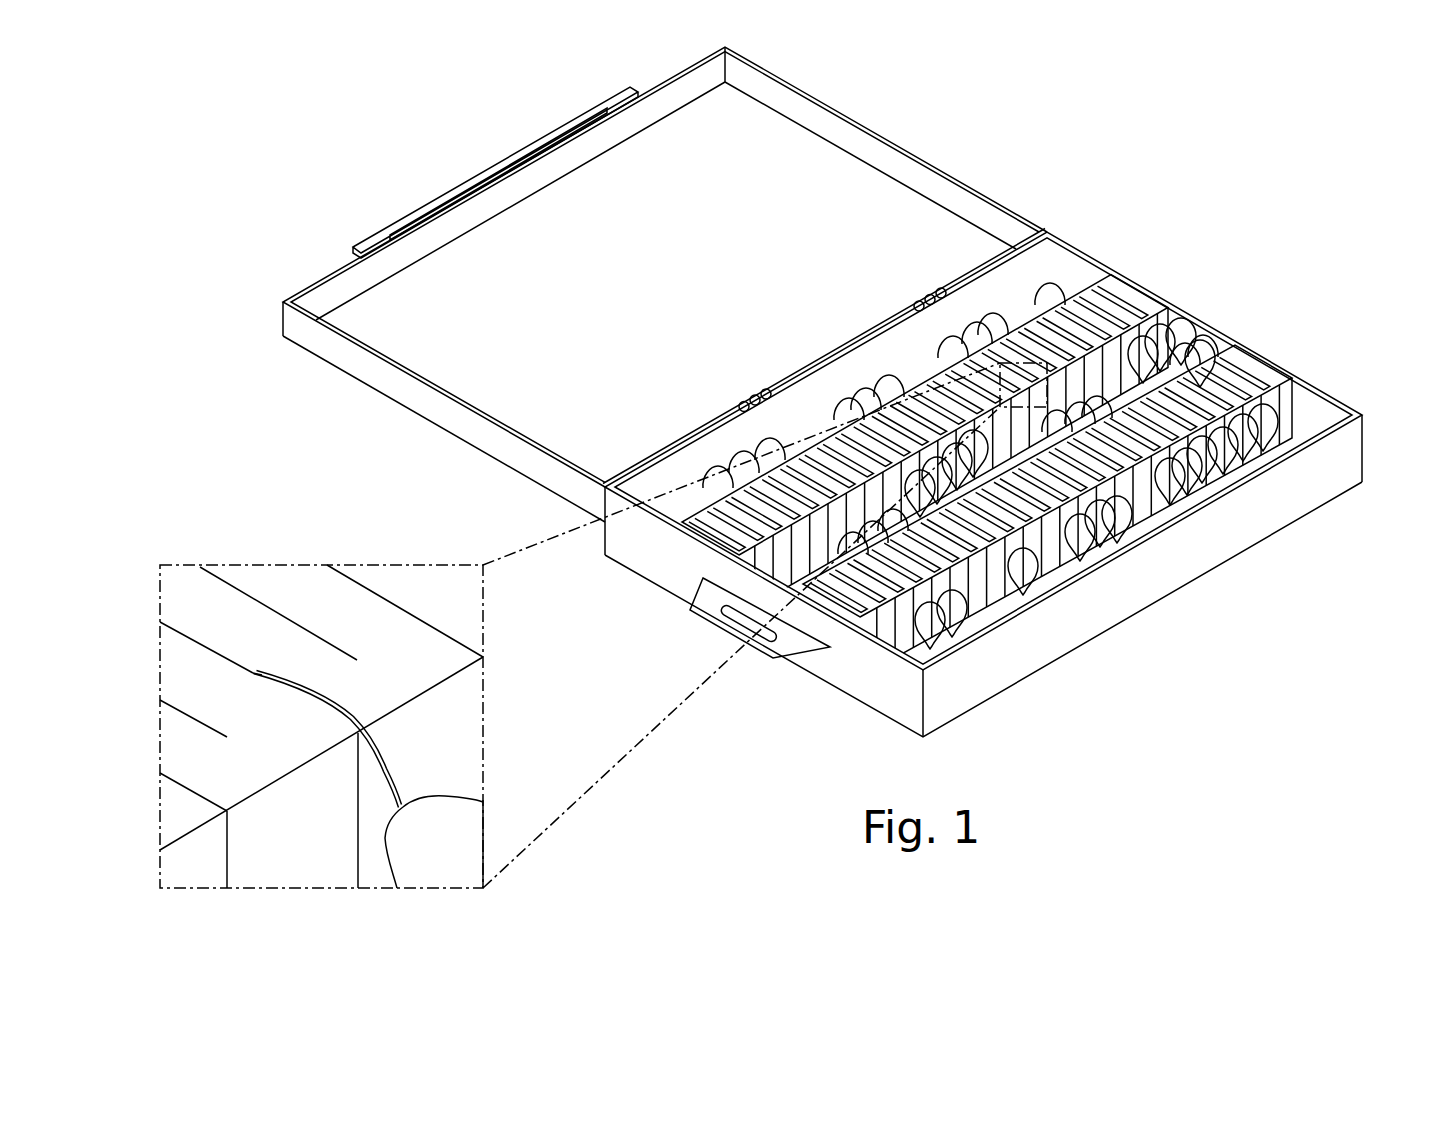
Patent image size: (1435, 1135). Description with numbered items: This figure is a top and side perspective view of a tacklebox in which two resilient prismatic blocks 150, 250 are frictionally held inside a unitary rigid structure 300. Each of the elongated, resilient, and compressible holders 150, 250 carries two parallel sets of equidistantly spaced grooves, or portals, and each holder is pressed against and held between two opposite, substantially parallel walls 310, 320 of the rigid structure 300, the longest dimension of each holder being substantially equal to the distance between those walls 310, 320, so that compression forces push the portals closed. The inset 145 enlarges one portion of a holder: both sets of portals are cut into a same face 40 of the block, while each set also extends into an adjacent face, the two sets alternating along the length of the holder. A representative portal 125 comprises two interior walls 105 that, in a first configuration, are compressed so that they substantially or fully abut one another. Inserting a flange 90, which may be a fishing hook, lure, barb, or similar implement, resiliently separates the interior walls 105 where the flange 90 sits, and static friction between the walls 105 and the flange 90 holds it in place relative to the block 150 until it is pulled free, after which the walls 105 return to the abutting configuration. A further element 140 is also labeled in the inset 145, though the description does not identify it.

The unitary rigid structure 300 is at (1077, 250).
The wall 310 is at (657, 562).
The wall 320 is at (1313, 407).
The resilient prismatic block 150 is at (1116, 285).
The resilient prismatic block 250 is at (1237, 355).
The flange 90 is at (1126, 517).
The inset 145 is at (287, 565).
The same face 40 is at (258, 670).
The interior walls 105 is at (247, 673).
The string 140 is at (392, 771).
The portal 125 is at (358, 866).